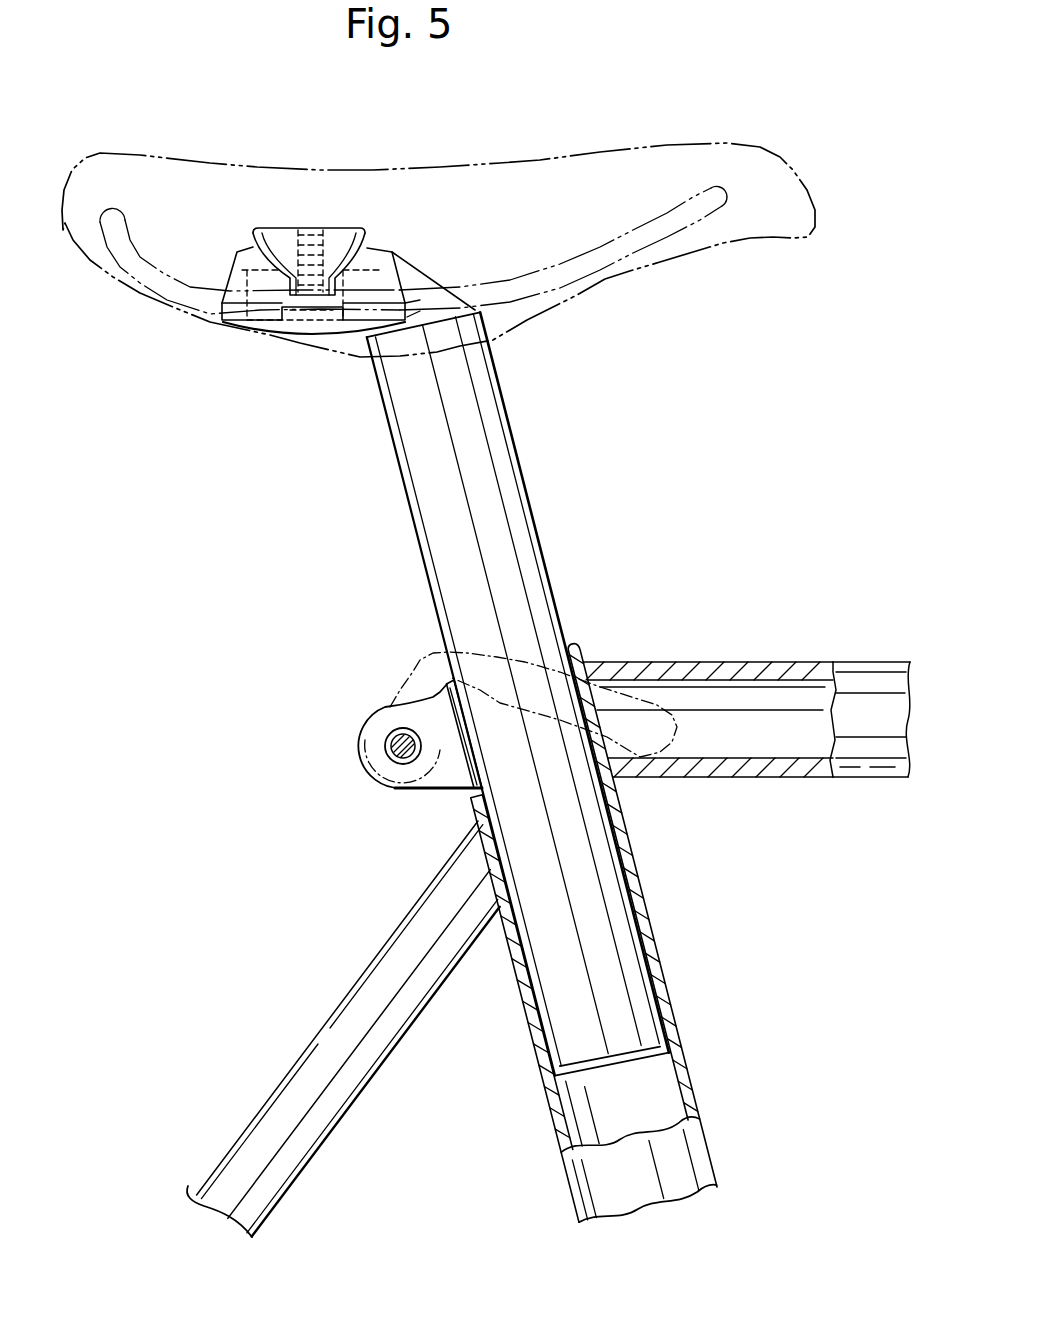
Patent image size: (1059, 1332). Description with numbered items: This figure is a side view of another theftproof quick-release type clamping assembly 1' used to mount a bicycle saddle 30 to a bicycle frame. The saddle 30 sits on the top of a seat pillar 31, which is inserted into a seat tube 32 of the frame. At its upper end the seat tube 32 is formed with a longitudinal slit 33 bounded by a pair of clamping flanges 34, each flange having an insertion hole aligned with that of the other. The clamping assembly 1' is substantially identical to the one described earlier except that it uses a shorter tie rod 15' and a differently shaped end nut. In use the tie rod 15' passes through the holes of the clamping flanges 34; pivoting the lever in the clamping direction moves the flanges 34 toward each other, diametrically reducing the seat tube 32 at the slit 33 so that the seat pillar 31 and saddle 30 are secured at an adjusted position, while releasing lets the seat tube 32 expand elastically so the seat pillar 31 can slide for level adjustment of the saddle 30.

The bicycle saddle 30 is at (538, 160).
The seat pillar 31 is at (528, 502).
The seat tube 32 is at (622, 822).
The longitudinal slit 33 is at (463, 743).
The clamping flanges 34 is at (397, 773).
The tie rod 15' is at (352, 746).
The theftproof quick-release type clamping assembly 1' is at (497, 697).